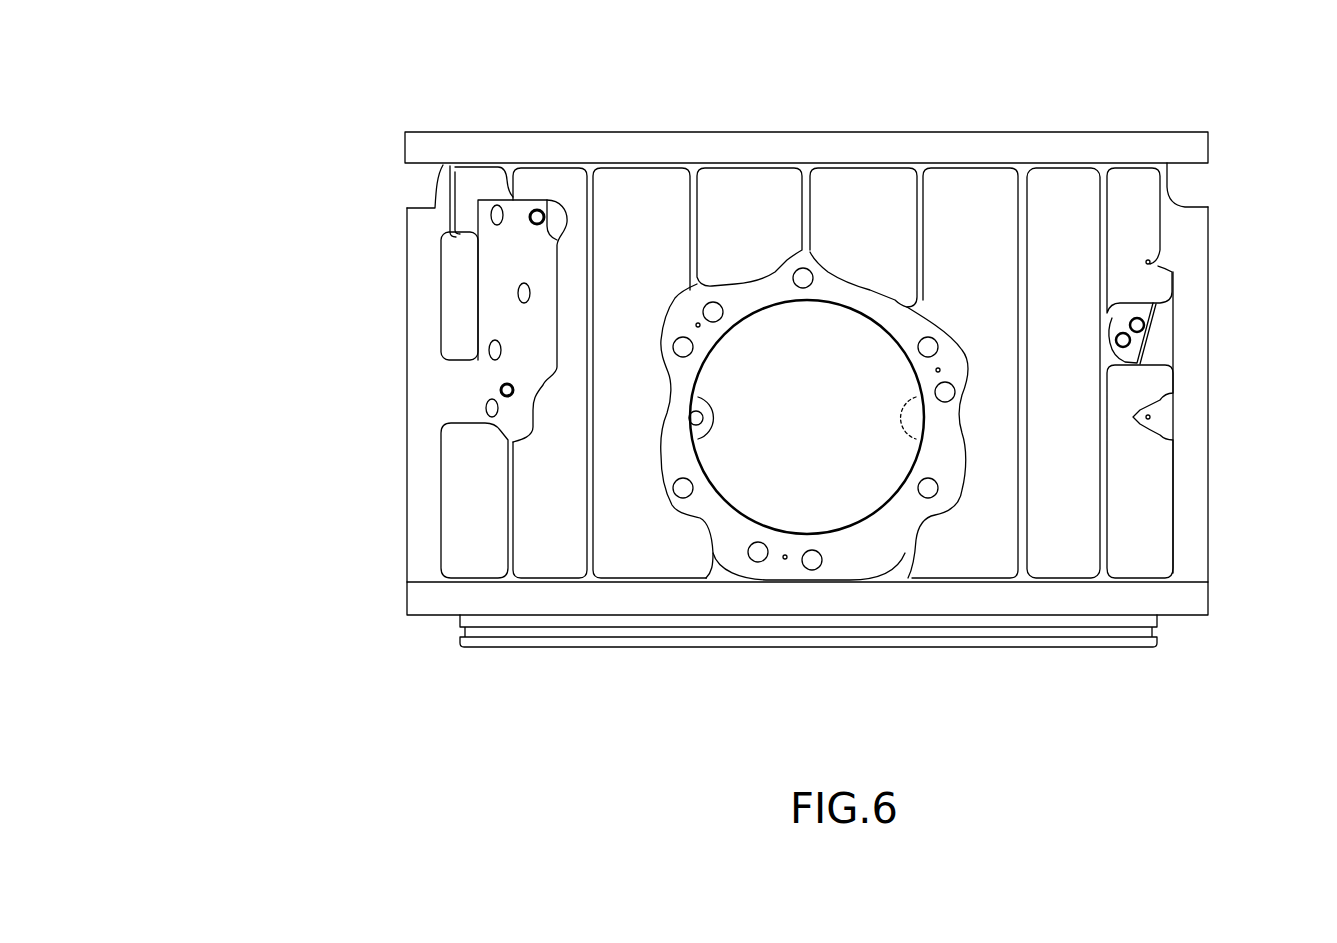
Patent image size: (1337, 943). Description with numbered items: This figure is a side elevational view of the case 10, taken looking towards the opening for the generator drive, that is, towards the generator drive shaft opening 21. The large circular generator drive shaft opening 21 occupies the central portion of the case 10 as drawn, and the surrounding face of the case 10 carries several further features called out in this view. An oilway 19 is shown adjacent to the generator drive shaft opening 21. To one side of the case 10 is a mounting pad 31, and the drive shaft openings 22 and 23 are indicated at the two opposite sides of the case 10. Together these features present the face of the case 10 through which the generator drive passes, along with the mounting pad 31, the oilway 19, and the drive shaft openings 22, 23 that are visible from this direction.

The case 10 is at (300, 546).
The oilway 19 is at (703, 415).
The generator drive shaft opening 21 is at (840, 487).
The drive shaft opening 22 is at (1208, 393).
The drive shaft opening 23 is at (407, 390).
The mounting pad 31 is at (508, 253).